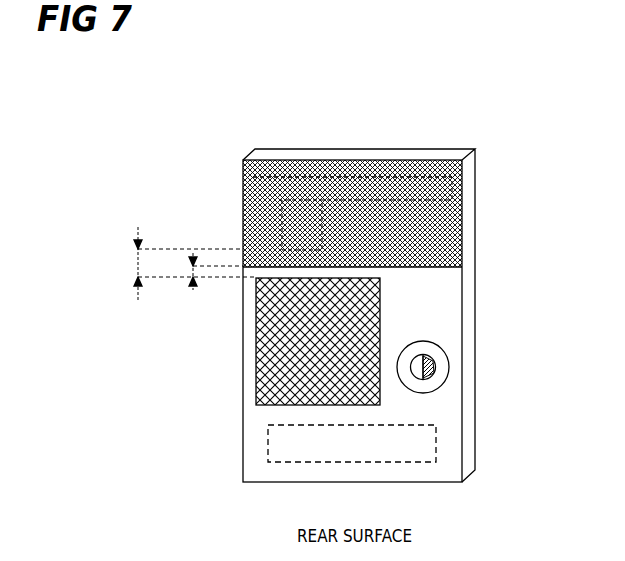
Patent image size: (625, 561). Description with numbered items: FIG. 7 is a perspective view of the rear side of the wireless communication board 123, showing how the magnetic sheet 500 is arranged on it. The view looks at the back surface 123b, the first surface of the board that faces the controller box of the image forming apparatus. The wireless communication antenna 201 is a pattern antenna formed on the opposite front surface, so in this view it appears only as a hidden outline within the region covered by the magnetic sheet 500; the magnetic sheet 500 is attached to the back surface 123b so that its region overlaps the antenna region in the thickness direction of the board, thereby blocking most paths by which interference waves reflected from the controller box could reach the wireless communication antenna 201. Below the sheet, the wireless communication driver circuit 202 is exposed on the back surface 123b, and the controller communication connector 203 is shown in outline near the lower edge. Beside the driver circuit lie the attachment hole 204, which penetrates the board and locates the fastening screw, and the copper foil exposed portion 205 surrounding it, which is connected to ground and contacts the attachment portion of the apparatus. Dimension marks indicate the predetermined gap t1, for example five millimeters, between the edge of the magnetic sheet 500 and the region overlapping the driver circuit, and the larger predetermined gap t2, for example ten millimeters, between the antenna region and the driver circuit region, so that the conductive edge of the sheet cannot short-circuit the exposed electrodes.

The wireless communication board 123 is at (330, 148).
The back surface 123b is at (430, 306).
The wireless communication antenna 201 is at (393, 163).
The magnetic sheet 500 is at (437, 226).
The wireless communication driver circuit 202 is at (242, 363).
The controller communication connector 203 is at (436, 452).
The attachment hole 204 is at (432, 358).
The copper foil exposed portion 205 is at (447, 376).
The predetermined gap t1 is at (188, 272).
The predetermined gap t2 is at (138, 264).